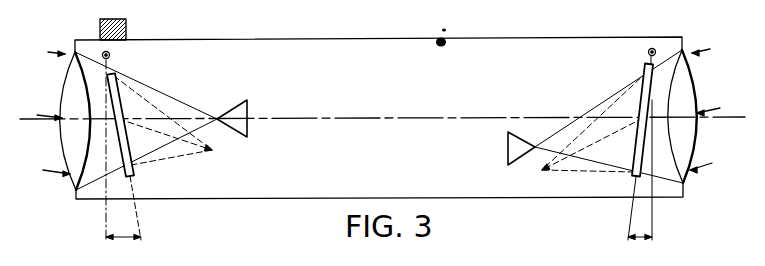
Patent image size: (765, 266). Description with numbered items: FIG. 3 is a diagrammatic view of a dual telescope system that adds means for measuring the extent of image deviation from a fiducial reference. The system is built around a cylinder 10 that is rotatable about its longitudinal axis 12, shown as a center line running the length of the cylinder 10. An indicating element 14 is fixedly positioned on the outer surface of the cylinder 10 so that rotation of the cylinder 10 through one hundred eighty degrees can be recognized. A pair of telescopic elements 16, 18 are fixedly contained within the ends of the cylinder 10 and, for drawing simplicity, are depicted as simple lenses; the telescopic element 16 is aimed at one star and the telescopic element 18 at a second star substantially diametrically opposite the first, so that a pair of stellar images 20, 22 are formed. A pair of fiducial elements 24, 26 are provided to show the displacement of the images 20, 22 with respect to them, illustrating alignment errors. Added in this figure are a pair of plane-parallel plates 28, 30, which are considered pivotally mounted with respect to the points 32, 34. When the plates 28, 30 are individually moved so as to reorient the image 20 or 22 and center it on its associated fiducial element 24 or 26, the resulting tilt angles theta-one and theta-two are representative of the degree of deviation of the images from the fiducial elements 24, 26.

The cylinder 10 is at (369, 40).
The longitudinal axis 12 is at (360, 119).
The indicating element 14 is at (126, 22).
The telescopic element 16 is at (68, 83).
The telescopic element 18 is at (688, 85).
The stellar image 20 is at (216, 117).
The stellar image 22 is at (536, 146).
The fiducial element 24 is at (241, 104).
The fiducial element 26 is at (507, 150).
The plane-parallel plate 28 is at (136, 171).
The plane-parallel plate 30 is at (636, 148).
The pivot point 32 is at (110, 55).
The pivot point 34 is at (648, 53).